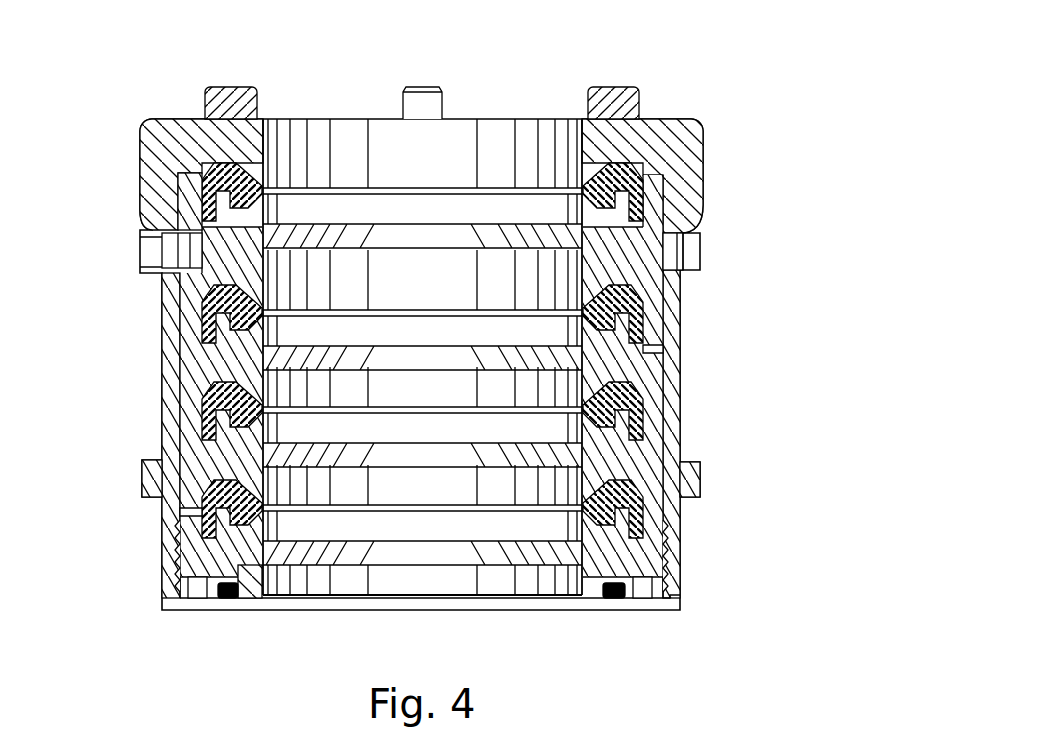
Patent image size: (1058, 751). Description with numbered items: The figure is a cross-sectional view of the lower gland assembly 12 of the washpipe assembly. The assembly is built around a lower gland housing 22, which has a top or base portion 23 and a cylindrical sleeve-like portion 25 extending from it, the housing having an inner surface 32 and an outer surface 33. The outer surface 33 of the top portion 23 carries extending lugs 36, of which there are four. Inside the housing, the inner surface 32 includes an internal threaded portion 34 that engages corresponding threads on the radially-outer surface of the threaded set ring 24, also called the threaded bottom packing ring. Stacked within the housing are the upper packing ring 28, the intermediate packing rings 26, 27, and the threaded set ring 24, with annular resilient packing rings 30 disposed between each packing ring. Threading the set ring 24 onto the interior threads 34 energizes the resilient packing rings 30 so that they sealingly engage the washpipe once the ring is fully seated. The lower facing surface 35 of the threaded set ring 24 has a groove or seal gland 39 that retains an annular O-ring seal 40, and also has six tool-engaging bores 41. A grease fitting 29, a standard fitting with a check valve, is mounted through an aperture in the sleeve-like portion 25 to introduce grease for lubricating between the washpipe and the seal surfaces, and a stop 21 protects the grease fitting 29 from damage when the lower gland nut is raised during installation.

The lower gland assembly 12 is at (785, 50).
The stop 21 is at (703, 240).
The lower gland housing 22 is at (668, 325).
The top portion 23 is at (653, 133).
The threaded set ring 24 is at (195, 553).
The sleeve-like portion 25 is at (668, 413).
The intermediate packing ring 26 is at (197, 452).
The intermediate packing ring 27 is at (193, 357).
The upper packing ring 28 is at (192, 203).
The grease fitting 29 is at (140, 250).
The annular resilient packing ring 30 is at (205, 172).
The inner surface 32 is at (187, 512).
The outer surface 33 is at (490, 117).
The internal threaded portion 34 is at (183, 573).
The lower facing surface 35 is at (630, 597).
The lug 36 is at (233, 87).
The seal gland 39 is at (240, 590).
The O-ring seal 40 is at (227, 592).
The tool-engaging bore 41 is at (197, 590).